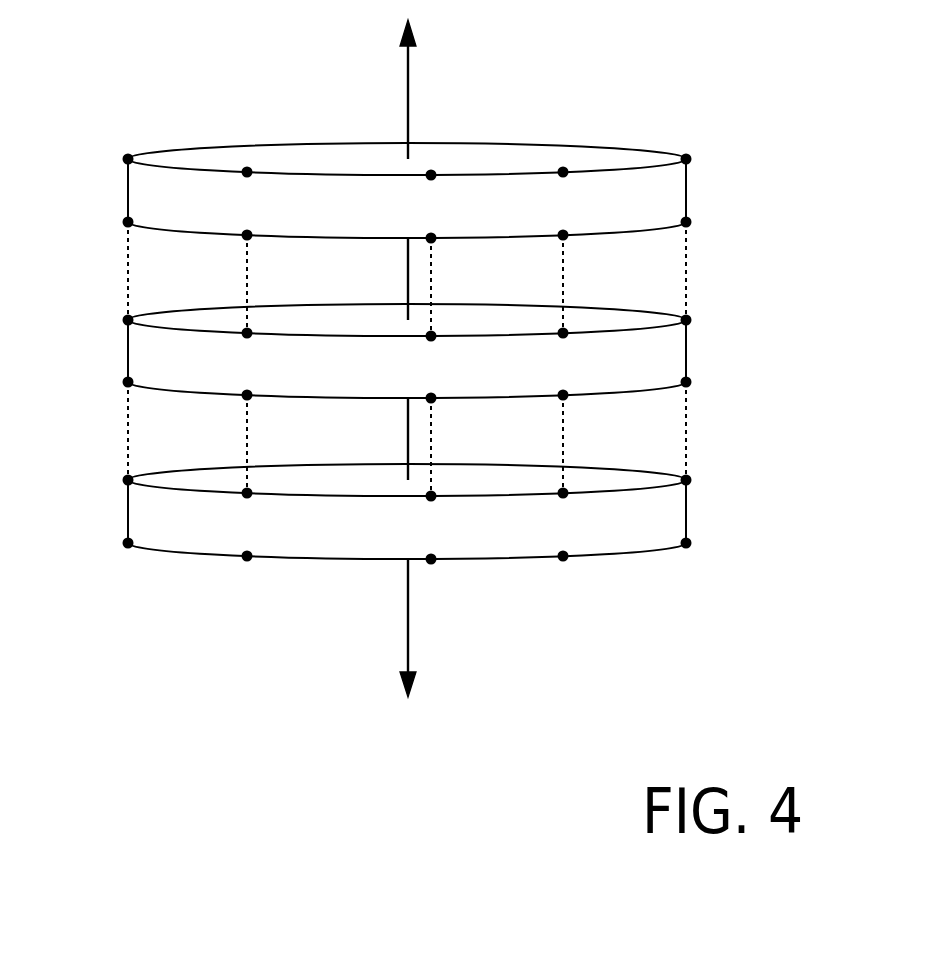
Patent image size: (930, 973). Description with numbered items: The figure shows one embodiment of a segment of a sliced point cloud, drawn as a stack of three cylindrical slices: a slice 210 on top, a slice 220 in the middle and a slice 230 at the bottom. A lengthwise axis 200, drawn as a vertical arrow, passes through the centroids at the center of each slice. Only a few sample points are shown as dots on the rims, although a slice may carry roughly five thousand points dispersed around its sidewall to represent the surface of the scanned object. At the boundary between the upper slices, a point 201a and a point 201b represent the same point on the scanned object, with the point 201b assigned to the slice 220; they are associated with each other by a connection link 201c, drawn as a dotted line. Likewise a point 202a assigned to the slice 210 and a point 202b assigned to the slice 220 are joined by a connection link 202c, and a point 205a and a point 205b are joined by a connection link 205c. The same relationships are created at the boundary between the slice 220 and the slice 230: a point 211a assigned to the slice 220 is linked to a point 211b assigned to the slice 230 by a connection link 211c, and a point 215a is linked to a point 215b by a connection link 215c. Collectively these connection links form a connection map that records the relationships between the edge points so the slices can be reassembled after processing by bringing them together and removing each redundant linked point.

The lengthwise axis 200 is at (408, 85).
The slice 210 is at (688, 196).
The slice 220 is at (688, 350).
The slice 230 is at (688, 513).
The point 201a is at (128, 222).
The point 201b is at (128, 320).
The connection link 201c is at (128, 252).
The point 202a is at (247, 235).
The point 202b is at (247, 333).
The connection link 202c is at (247, 268).
The point 205a is at (686, 222).
The point 205b is at (686, 320).
The connection link 205c is at (688, 268).
The point 211a is at (128, 382).
The point 211b is at (128, 480).
The connection link 211c is at (128, 410).
The point 215a is at (686, 382).
The point 215b is at (686, 480).
The connection link 215c is at (688, 440).